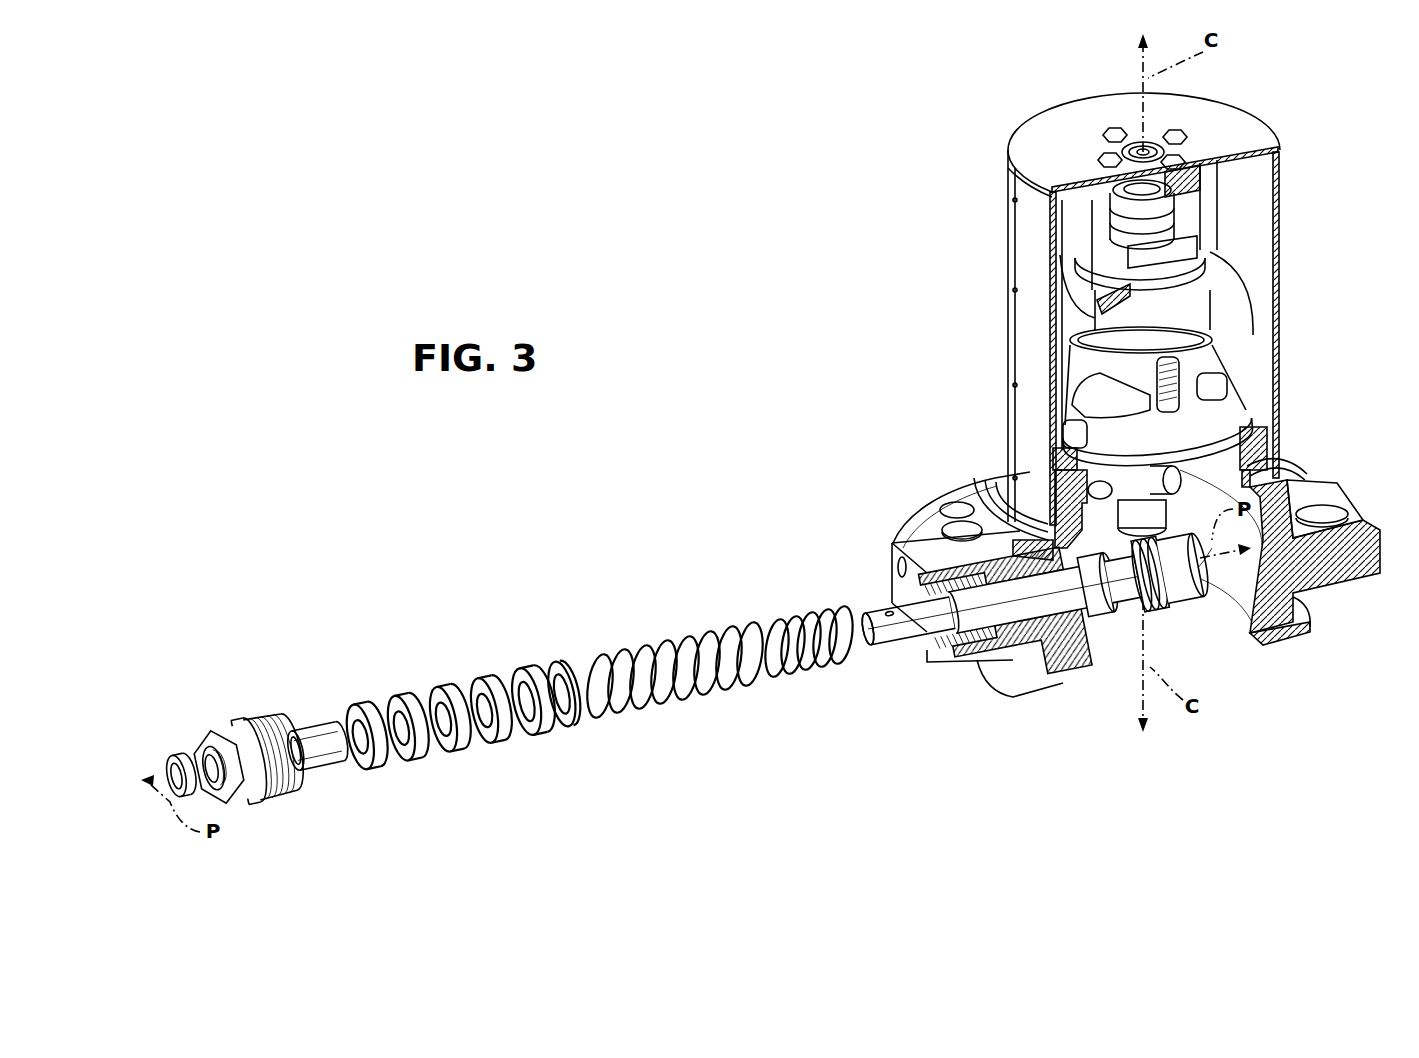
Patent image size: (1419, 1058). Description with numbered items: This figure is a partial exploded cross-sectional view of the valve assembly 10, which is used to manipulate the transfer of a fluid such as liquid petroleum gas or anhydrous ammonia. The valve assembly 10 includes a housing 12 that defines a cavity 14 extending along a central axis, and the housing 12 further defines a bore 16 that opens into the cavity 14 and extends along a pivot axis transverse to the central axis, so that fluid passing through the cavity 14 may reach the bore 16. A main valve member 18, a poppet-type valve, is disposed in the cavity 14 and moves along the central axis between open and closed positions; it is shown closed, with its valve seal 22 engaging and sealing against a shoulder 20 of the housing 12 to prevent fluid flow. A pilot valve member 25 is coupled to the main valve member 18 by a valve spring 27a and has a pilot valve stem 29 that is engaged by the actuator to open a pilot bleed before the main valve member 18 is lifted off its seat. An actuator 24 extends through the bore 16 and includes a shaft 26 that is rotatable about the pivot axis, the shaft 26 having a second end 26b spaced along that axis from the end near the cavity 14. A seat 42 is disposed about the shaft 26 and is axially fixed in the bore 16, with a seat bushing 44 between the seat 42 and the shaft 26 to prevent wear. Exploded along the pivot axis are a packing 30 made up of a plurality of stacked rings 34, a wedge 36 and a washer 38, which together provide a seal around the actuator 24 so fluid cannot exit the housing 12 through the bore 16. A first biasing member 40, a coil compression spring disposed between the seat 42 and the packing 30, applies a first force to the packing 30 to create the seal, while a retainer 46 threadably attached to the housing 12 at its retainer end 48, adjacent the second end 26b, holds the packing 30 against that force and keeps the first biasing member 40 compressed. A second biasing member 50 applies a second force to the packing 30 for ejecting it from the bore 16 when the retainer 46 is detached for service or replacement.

The valve assembly 10 is at (1296, 95).
The housing 12 is at (1008, 235).
The cavity 14 is at (1218, 588).
The bore 16 is at (950, 652).
The main valve member 18 is at (1242, 388).
The shoulder 20 is at (1075, 463).
The valve seal 22 is at (1072, 446).
The actuator 24 is at (1082, 645).
The pilot valve member 25 is at (1232, 355).
The shaft 26 is at (997, 590).
The second end 26b is at (884, 596).
The valve spring 27a is at (1167, 220).
The pilot valve stem 29 is at (1150, 517).
The packing 30 is at (490, 760).
The rings 34 is at (413, 692).
The wedge 36 is at (528, 668).
The washer 38 is at (560, 658).
The first biasing member 40 is at (858, 655).
The seat 42 is at (1074, 618).
The seat bushing 44 is at (1157, 606).
The retainer 46 is at (233, 730).
The retainer end 48 is at (947, 575).
The second biasing member 50 is at (700, 698).